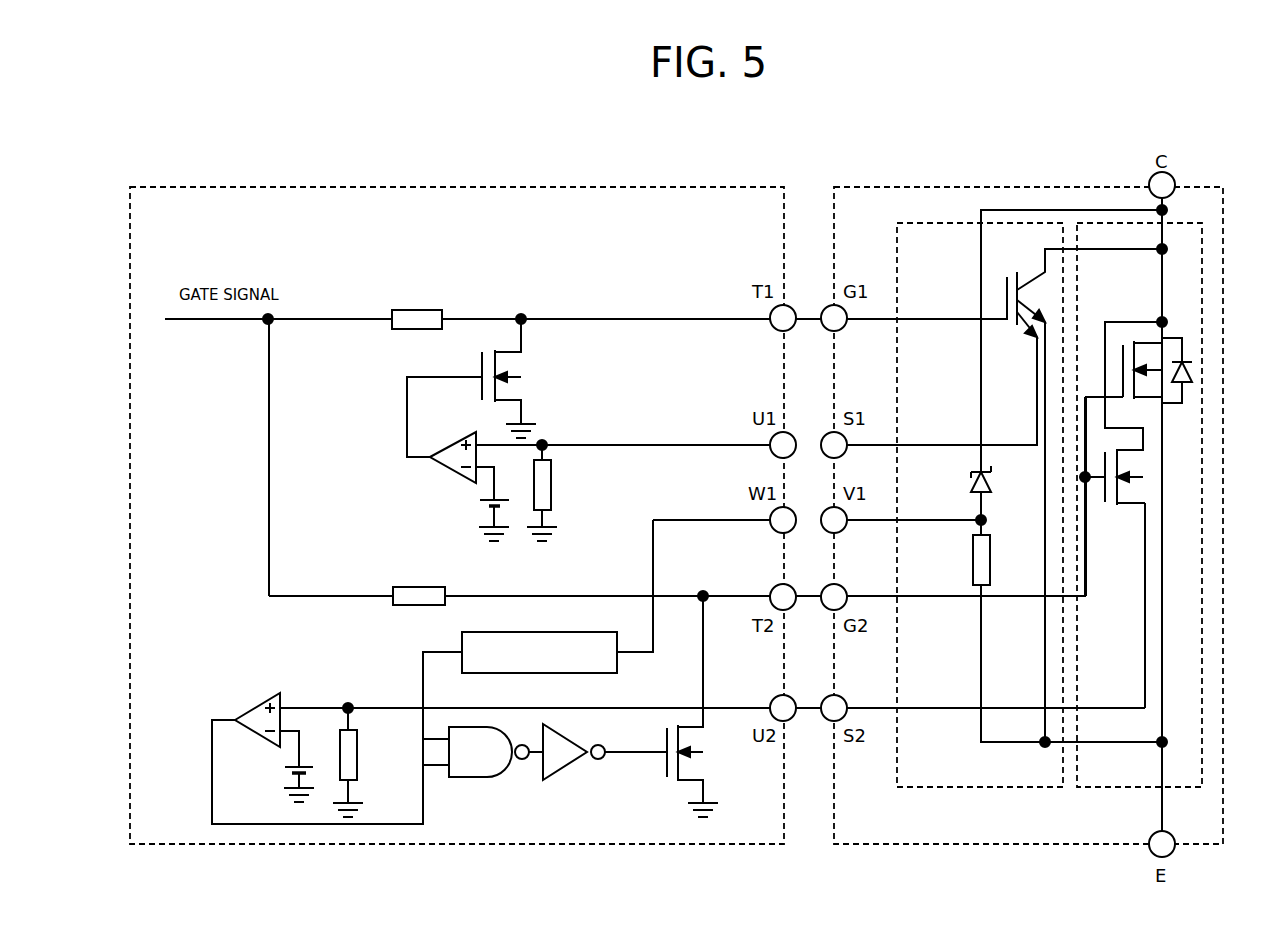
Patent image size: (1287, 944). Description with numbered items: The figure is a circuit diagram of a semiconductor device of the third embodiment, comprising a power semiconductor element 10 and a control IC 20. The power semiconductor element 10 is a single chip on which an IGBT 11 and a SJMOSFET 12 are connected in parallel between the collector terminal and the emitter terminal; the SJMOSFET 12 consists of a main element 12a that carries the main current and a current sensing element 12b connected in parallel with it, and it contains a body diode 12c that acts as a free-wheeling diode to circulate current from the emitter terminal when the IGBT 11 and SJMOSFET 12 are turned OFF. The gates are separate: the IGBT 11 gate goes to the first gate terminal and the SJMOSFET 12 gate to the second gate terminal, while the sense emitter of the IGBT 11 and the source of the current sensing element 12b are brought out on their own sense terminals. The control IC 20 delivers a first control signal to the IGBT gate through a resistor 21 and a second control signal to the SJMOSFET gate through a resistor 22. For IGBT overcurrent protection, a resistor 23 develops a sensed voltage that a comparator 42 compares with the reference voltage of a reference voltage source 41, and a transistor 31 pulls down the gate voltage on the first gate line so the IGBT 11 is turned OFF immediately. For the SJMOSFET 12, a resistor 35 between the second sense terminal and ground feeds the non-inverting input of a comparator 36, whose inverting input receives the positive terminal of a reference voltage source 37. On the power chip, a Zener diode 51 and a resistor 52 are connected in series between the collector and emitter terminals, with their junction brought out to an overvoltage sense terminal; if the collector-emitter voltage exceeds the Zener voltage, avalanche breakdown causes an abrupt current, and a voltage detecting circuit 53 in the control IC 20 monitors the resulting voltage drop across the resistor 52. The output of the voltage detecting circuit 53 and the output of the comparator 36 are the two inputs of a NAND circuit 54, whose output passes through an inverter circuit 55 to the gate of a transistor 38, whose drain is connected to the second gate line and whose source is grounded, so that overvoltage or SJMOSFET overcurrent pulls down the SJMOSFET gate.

The power semiconductor element 10 is at (959, 187).
The IGBT 11 is at (1041, 223).
The SJMOSFET 12 is at (1120, 223).
The main element 12a is at (1133, 330).
The current sensing element 12b is at (1150, 467).
The body diode 12c is at (1193, 370).
The control IC 20 is at (528, 187).
The resistor 21 is at (413, 310).
The resistor 22 is at (416, 587).
The resistor 23 is at (552, 484).
The transistor 31 is at (524, 378).
The resistor 35 is at (359, 760).
The comparator 36 is at (254, 701).
The reference voltage source 37 is at (284, 768).
The transistor 38 is at (672, 728).
The reference voltage source 41 is at (479, 502).
The comparator 42 is at (446, 445).
The Zener diode 51 is at (995, 485).
The resistor 52 is at (992, 561).
The voltage detecting circuit 53 is at (530, 632).
The NAND circuit 54 is at (483, 778).
The inverter circuit 55 is at (554, 779).